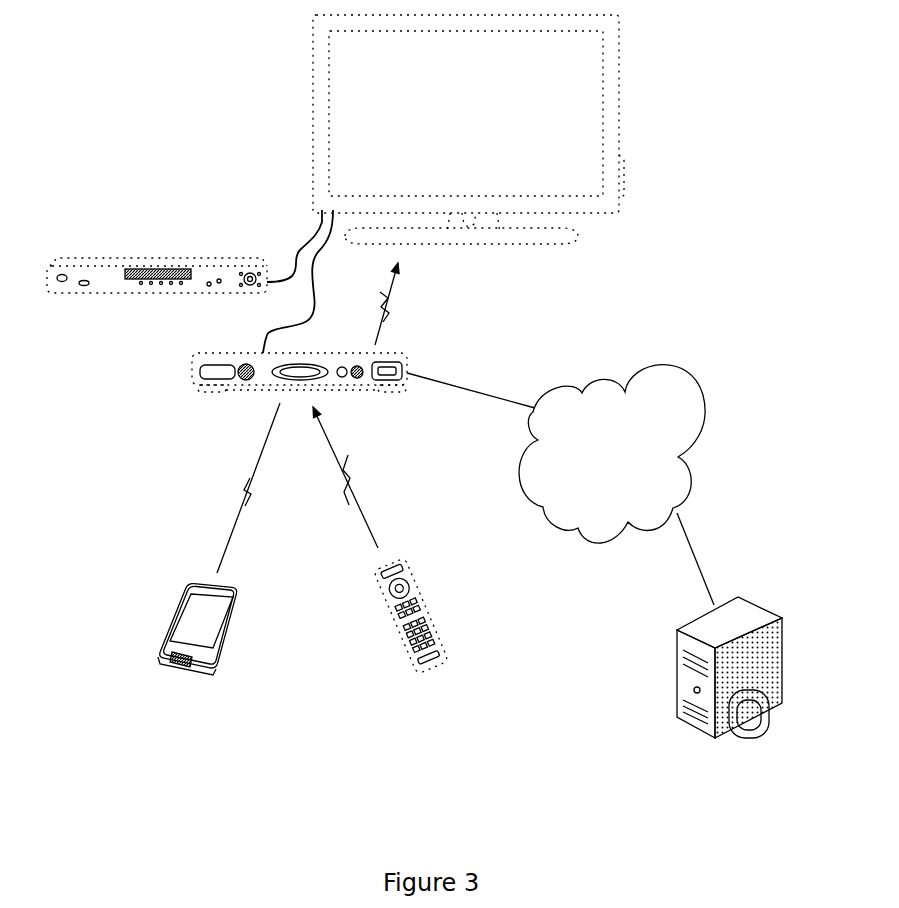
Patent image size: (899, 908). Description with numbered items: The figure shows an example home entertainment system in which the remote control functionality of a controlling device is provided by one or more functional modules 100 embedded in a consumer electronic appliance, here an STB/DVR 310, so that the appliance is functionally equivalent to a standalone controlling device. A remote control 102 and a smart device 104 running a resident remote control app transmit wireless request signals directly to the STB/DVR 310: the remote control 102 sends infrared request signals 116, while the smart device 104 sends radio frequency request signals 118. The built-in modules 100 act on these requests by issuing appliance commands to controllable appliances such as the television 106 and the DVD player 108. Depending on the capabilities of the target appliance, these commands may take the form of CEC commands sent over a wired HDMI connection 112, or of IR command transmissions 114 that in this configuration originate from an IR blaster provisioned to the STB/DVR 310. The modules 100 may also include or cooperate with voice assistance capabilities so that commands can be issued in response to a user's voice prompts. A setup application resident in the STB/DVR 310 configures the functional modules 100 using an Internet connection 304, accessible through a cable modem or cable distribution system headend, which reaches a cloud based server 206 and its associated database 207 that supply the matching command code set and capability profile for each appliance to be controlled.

The controlling device module 100 is at (400, 383).
The remote control device 102 is at (442, 683).
The smart device 104 is at (163, 670).
The television 106 is at (587, 217).
The DVD player 108 is at (120, 308).
The HDMI connection 112 is at (312, 225).
The IR command transmissions 114 is at (388, 315).
The IR request signals 116 is at (362, 500).
The RF request signals 118 is at (233, 505).
The cloud based server 206 is at (750, 593).
The database 207 is at (757, 745).
The Internet connection 304 is at (650, 356).
The STB/DVR 310 is at (238, 393).